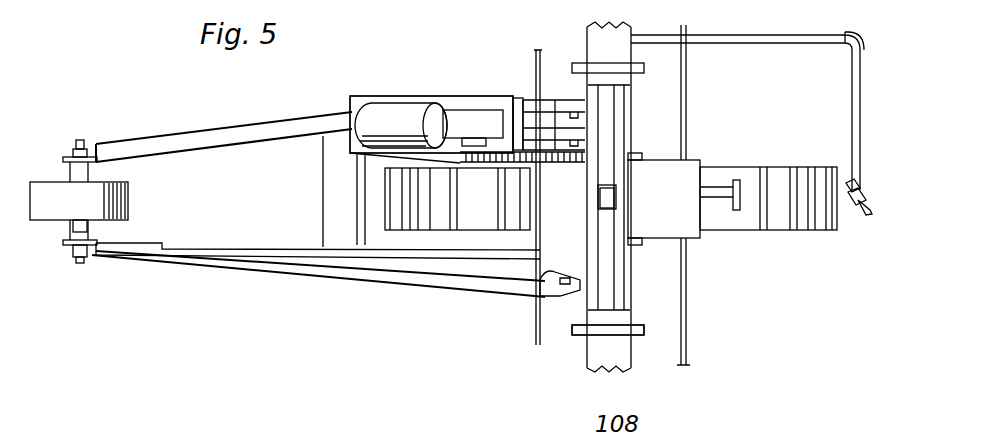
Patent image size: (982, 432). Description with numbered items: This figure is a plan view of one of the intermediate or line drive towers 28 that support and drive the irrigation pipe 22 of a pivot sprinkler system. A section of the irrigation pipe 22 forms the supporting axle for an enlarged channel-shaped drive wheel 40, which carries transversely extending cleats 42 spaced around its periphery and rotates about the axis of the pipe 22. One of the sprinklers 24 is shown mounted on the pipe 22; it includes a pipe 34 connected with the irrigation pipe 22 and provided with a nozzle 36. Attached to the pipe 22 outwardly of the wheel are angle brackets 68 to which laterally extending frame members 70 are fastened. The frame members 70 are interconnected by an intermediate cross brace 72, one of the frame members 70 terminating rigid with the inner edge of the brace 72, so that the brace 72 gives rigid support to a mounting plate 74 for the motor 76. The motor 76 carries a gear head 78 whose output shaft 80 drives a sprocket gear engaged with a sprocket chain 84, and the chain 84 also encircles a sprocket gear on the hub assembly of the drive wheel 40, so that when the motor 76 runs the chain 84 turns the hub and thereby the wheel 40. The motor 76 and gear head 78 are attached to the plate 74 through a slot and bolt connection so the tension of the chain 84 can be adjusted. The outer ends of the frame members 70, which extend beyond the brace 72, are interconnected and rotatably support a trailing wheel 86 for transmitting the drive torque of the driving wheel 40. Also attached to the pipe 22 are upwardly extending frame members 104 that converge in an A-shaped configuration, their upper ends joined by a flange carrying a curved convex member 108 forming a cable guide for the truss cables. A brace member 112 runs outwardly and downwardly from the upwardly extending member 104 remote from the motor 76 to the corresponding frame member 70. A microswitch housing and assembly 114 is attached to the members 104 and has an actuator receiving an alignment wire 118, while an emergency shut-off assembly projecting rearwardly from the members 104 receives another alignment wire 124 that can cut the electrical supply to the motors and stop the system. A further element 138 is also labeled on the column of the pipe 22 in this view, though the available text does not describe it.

The irrigation pipe 22 is at (608, 216).
The sprinkler 24 is at (790, 36).
The intermediate or line drive tower 28 is at (467, 84).
The pipe 34 is at (862, 100).
The nozzle 36 is at (868, 213).
The drive wheel 40 is at (775, 210).
The cleats 42 is at (813, 215).
The angle brackets 68 is at (542, 282).
The frame members 70 is at (172, 150).
The intermediate cross brace 72 is at (323, 165).
The mounting plate 74 is at (460, 96).
The motor 76 is at (380, 104).
The gear head 78 is at (479, 110).
The output shaft 80 is at (482, 150).
The sprocket chain 84 is at (522, 165).
The trailing wheel 86 is at (47, 205).
The upwardly extending frame members 104 is at (605, 252).
The curved convex member 108 is at (606, 193).
The brace member 112 is at (301, 246).
The microswitch housing and assembly 114 is at (696, 170).
The alignment wire 118 is at (688, 348).
The alignment wire 124 is at (537, 320).
The flange 138 is at (650, 328).